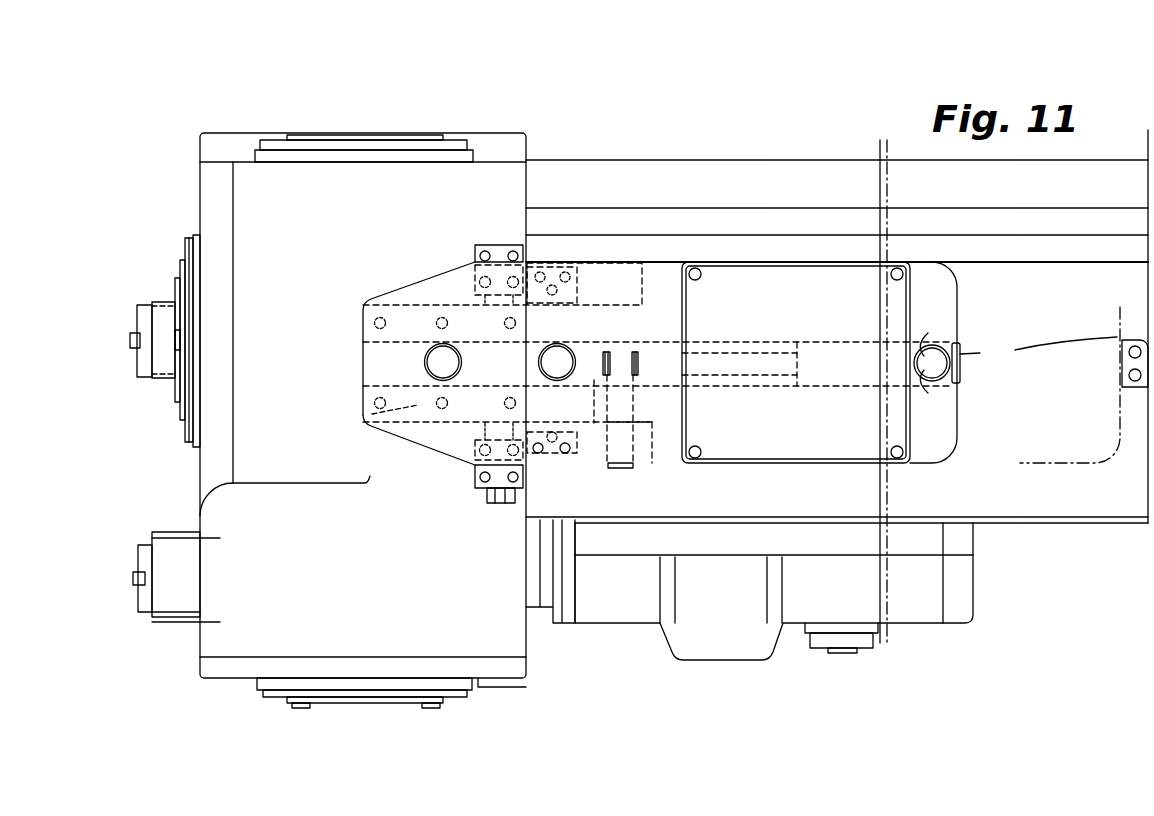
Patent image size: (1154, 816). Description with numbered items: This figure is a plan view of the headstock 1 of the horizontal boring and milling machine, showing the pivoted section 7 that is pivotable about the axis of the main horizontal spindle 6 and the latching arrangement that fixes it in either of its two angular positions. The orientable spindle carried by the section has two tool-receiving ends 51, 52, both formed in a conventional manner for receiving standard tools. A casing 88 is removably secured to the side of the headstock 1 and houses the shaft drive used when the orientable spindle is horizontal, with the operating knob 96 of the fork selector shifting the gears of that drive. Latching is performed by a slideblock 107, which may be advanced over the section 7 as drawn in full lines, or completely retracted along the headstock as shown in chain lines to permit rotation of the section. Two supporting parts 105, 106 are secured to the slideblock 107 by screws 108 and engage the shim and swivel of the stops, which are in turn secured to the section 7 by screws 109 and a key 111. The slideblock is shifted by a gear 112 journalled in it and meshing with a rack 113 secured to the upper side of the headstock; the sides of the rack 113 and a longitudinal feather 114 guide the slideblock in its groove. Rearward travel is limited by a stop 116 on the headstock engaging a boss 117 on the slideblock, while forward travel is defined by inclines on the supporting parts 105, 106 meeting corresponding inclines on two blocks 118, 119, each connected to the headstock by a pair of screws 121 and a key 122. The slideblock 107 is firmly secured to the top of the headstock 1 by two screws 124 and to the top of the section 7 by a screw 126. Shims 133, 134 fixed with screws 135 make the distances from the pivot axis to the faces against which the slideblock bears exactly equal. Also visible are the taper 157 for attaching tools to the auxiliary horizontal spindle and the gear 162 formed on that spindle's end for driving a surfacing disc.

The headstock 1 is at (734, 172).
The horizontal rotary spindle 6 is at (145, 302).
The pivoted section 7 is at (477, 630).
The end of the orientable spindle 51 is at (343, 132).
The end of the orientable spindle 52 is at (320, 700).
The casing 88 is at (935, 598).
The operating knob 96 is at (878, 647).
The supporting part 105 is at (478, 302).
The supporting part 106 is at (477, 427).
The slideblock 107 is at (414, 436).
The screws 108 is at (562, 304).
The screws 109 is at (513, 248).
The key 111 is at (473, 470).
The gear 112 is at (628, 355).
The rack 113 is at (705, 378).
The longitudinal feather 114 is at (890, 340).
The stop 116 is at (1124, 344).
The boss 117 is at (1038, 349).
The block 118 is at (577, 290).
The block 119 is at (577, 437).
The screws 121 is at (543, 455).
The key 122 is at (570, 463).
The screws 124 is at (562, 352).
The screw 126 is at (437, 358).
The shim 133 is at (378, 333).
The shim 134 is at (362, 421).
The screws 135 is at (375, 405).
The taper 157 is at (140, 550).
The gear 162 is at (182, 620).